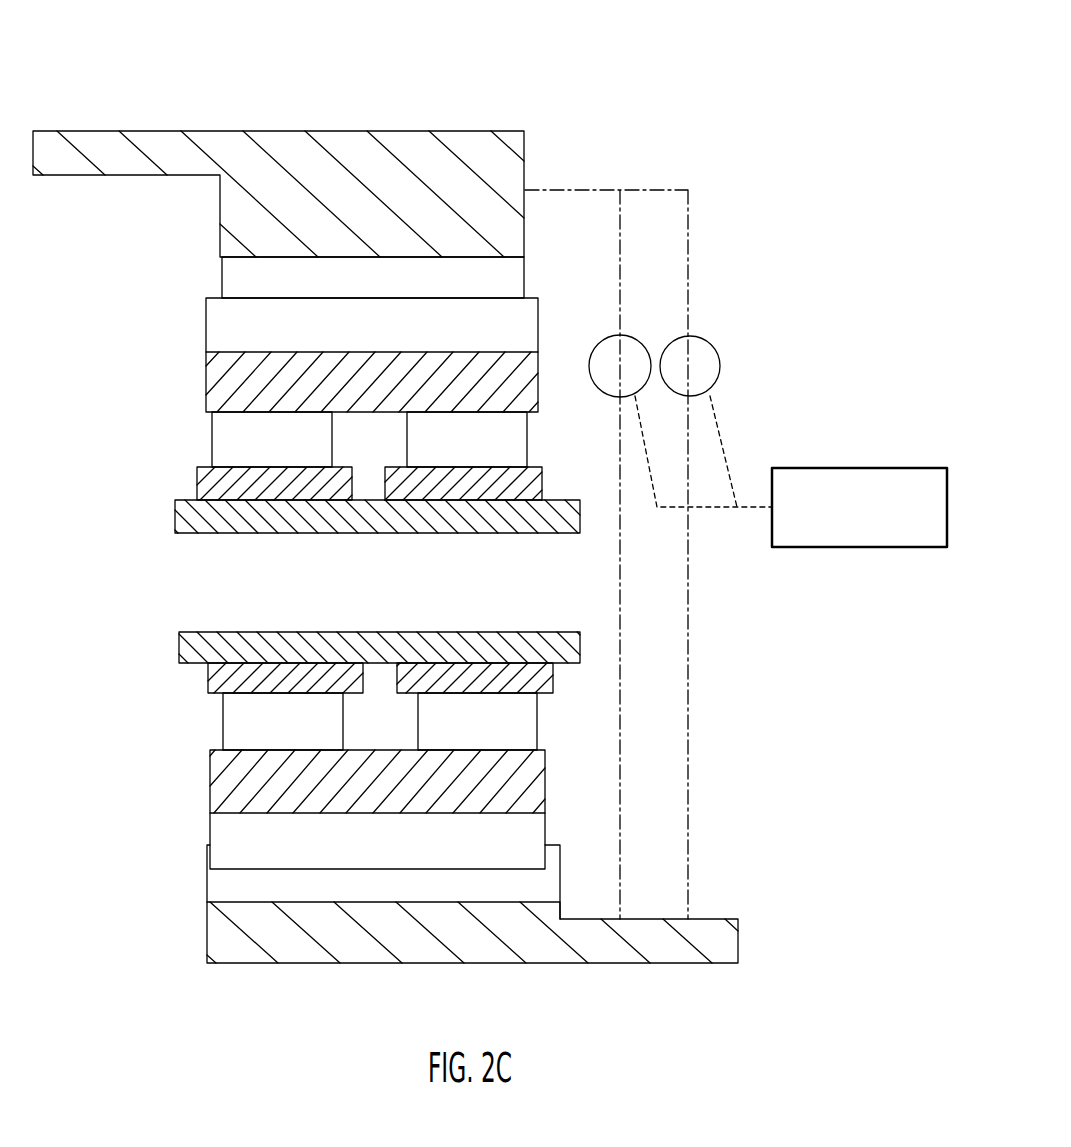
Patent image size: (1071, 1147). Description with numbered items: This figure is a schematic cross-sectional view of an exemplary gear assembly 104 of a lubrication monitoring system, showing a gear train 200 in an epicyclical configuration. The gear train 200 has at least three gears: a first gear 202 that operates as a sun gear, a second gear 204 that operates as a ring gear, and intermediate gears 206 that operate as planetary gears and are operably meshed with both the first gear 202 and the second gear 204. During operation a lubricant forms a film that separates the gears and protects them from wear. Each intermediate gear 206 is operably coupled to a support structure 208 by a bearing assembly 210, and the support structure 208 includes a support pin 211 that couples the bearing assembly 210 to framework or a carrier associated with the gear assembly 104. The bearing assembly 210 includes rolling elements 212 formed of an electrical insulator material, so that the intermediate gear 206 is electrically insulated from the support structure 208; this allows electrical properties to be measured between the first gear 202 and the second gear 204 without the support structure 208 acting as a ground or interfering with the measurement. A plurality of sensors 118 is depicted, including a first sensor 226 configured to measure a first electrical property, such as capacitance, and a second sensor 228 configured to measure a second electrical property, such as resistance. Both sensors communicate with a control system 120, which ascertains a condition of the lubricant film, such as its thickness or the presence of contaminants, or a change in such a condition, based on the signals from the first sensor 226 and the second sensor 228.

The gear assembly 104 is at (605, 84).
The gear train 200 is at (553, 161).
The second gear 204 is at (348, 131).
The intermediate gear 206 is at (206, 378).
The rolling elements 212 is at (212, 450).
The bearing assembly 210 is at (197, 482).
The support structure 208 is at (307, 581).
The support pin 211 is at (175, 521).
The first gear 202 is at (285, 963).
The sensors 118 is at (774, 296).
The first sensor 226 is at (613, 336).
The second sensor 228 is at (720, 362).
The control system 120 is at (792, 468).